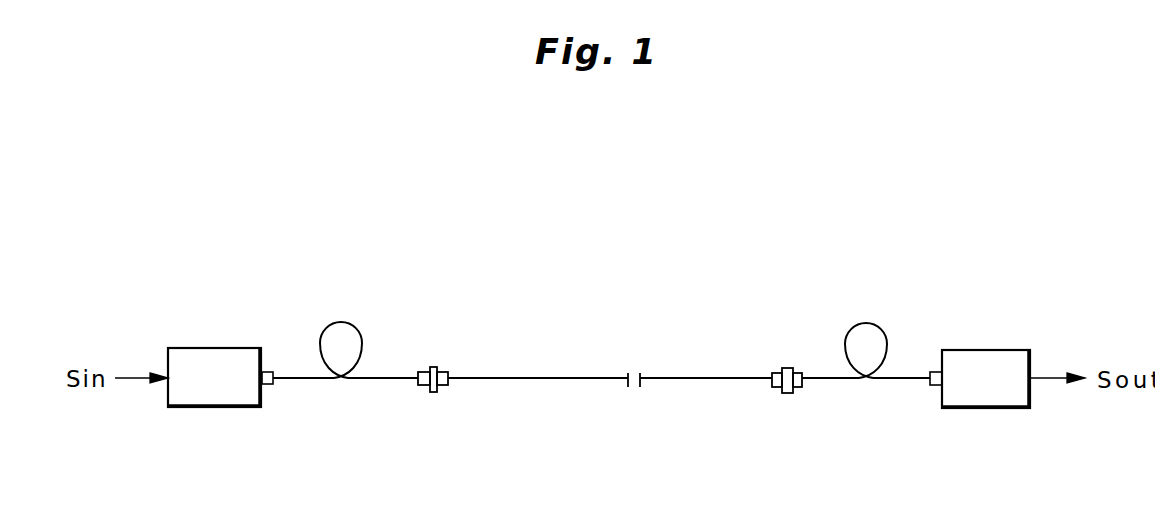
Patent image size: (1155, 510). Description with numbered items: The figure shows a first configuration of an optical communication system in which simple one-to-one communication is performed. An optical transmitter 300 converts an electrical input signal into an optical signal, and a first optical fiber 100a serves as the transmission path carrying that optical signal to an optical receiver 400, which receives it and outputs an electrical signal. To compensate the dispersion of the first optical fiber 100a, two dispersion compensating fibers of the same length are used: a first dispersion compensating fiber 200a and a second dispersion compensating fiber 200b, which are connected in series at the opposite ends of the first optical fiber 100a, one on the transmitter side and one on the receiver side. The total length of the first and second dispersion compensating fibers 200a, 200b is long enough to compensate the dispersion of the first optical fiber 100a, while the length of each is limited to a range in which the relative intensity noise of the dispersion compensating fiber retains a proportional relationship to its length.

The optical transmitter 300 is at (213, 348).
The optical receiver 400 is at (982, 350).
The first optical fiber 100a is at (553, 378).
The first dispersion compensating fiber 200a is at (350, 322).
The second dispersion compensating fiber 200b is at (873, 323).